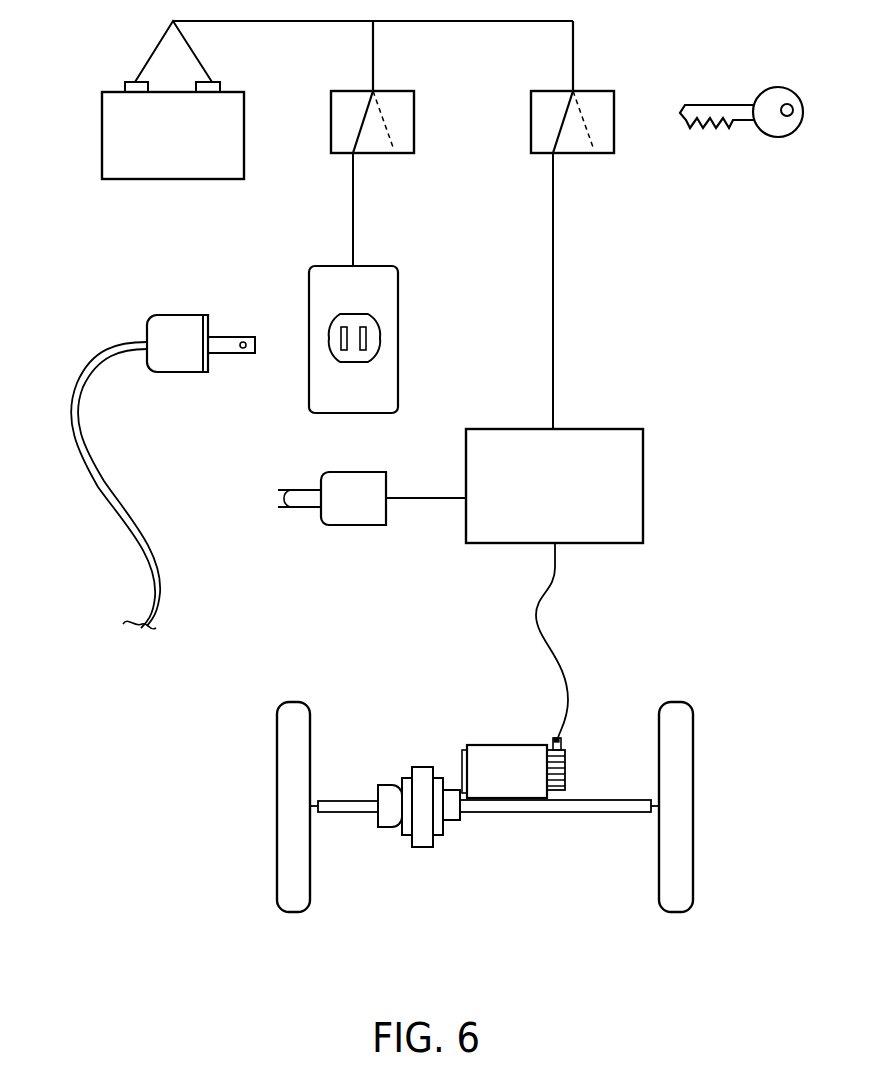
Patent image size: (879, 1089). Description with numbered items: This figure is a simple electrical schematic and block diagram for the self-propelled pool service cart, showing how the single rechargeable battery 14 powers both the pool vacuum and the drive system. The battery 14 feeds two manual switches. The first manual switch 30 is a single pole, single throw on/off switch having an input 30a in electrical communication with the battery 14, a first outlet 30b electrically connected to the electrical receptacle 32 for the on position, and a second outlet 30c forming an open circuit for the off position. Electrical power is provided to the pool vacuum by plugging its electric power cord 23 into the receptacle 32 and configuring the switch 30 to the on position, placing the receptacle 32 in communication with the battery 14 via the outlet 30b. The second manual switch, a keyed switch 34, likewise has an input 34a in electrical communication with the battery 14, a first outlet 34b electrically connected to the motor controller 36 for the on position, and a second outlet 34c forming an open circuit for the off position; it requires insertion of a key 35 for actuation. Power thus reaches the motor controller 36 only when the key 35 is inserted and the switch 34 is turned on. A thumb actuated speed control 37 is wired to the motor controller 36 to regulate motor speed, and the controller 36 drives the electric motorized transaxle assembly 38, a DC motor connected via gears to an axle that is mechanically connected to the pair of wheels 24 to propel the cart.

The rechargeable battery 14 is at (108, 135).
The electric power cord 23 is at (78, 380).
The wheels 24 is at (277, 778).
The first manual switch 30 is at (378, 152).
The input 30a is at (374, 91).
The first outlet 30b is at (353, 153).
The second outlet 30c is at (395, 140).
The electrical receptacle 32 is at (398, 317).
The keyed switch 34 is at (578, 233).
The input 34a is at (574, 91).
The first outlet 34b is at (553, 153).
The second outlet 34c is at (595, 140).
The key 35 is at (770, 90).
The motor controller 36 is at (645, 450).
The thumb actuated speed control 37 is at (358, 518).
The electric motorized transaxle assembly 38 is at (500, 743).